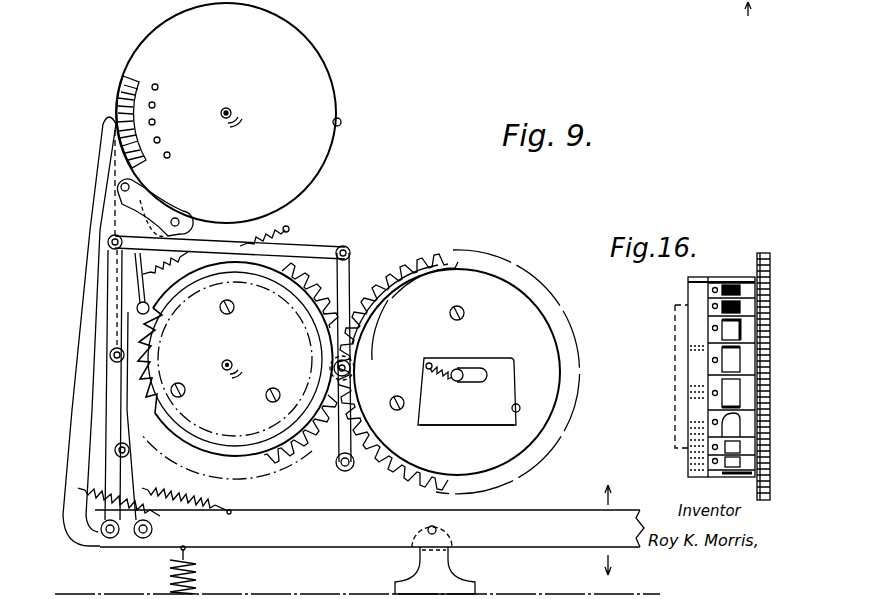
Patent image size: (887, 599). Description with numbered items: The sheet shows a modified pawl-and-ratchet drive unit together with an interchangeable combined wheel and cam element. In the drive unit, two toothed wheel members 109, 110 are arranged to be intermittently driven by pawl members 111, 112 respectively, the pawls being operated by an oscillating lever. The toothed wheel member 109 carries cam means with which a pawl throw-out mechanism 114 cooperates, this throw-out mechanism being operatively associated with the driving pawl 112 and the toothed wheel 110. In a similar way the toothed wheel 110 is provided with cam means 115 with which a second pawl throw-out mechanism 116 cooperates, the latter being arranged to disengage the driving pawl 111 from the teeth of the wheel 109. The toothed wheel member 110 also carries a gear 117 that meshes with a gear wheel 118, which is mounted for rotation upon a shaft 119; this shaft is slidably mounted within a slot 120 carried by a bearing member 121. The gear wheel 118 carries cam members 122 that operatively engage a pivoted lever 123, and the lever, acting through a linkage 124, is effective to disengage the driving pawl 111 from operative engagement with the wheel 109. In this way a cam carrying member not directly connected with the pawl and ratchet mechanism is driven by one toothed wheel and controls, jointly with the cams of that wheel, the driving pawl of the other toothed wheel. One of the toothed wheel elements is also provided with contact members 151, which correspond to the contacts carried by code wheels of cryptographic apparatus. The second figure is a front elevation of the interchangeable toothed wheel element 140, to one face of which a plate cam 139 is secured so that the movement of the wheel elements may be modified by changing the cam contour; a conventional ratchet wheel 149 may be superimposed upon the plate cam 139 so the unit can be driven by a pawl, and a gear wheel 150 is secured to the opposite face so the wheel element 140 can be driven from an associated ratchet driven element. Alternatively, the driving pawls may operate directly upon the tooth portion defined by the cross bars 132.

In FIG. 9, the toothed wheel member 109 is at (226, 113).
In FIG. 9, the toothed wheel member 110 is at (238, 370).
In FIG. 9, the pawl member 111 is at (80, 324).
In FIG. 9, the pawl member 112 is at (145, 482).
In FIG. 9, the pawl throw-out mechanism 114 is at (146, 214).
In FIG. 9, the cam means 115 is at (340, 124).
In FIG. 9, the pawl throw-out mechanism 116 is at (112, 405).
In FIG. 9, the gear 117 is at (320, 292).
In FIG. 9, the gear wheel 118 is at (484, 267).
In FIG. 9, the shaft 119 is at (460, 368).
In FIG. 9, the slot 120 is at (469, 391).
In FIG. 9, the bearing member 121 is at (455, 420).
In FIG. 9, the cam members 122 is at (438, 270).
In FIG. 9, the pivoted lever 123 is at (342, 453).
In FIG. 9, the linkage 124 is at (298, 252).
In FIG. 9, the contact members 151 is at (155, 122).
In FIG. 16, the cross bars 132 is at (728, 378).
In FIG. 16, the plate cam 139 is at (697, 320).
In FIG. 16, the toothed wheel element 140 is at (738, 277).
In FIG. 16, the ratchet wheel 149 is at (676, 372).
In FIG. 16, the gear wheel 150 is at (768, 258).